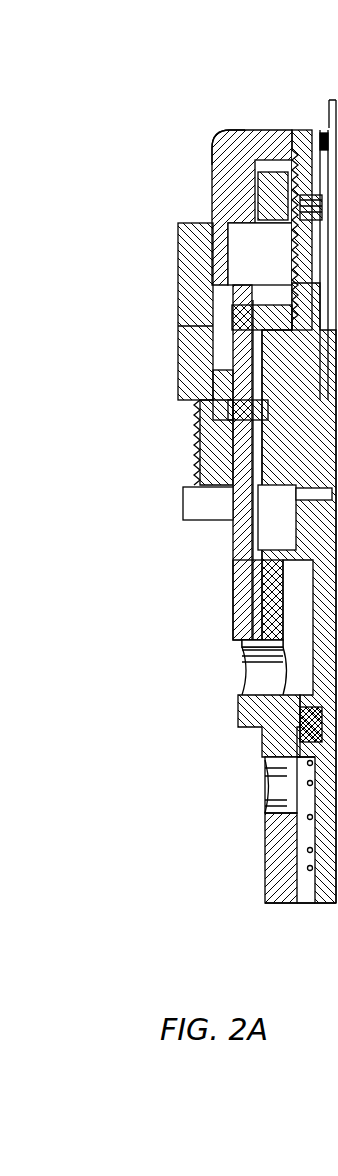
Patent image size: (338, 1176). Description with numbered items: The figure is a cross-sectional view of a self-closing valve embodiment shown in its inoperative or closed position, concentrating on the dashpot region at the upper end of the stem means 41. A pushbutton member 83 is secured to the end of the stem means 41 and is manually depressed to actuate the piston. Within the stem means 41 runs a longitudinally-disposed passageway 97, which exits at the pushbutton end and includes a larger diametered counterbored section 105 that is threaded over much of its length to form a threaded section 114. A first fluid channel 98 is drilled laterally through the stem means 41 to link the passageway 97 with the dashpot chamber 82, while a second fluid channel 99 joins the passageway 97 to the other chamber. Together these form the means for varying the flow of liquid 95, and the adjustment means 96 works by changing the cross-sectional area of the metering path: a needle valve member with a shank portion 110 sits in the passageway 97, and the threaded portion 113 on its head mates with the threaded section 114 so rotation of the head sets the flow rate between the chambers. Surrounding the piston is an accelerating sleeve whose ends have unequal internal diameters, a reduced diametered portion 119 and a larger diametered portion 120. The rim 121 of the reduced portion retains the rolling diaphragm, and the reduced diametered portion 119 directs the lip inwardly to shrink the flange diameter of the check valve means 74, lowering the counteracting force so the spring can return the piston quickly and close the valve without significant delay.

The threaded portion 113 is at (228, 130).
The pushbutton member 83 is at (230, 130).
The adjustment means 96 is at (305, 178).
The shank portion 110 is at (300, 240).
The threaded section 114 is at (255, 250).
The larger diametered counterbored section 105 is at (233, 318).
The longitudinally-disposed passageway 97 is at (250, 326).
The first fluid channel 98 is at (238, 378).
The rim 121 is at (245, 417).
The reduced diametered portion 119 is at (230, 433).
The means for varying the flow of liquid 95 is at (300, 461).
The check valve means 74 is at (235, 485).
The second fluid channel 99 is at (300, 487).
The chamber 82 is at (275, 532).
The larger diametered portion 120 is at (243, 522).
The stem means 41 is at (245, 570).